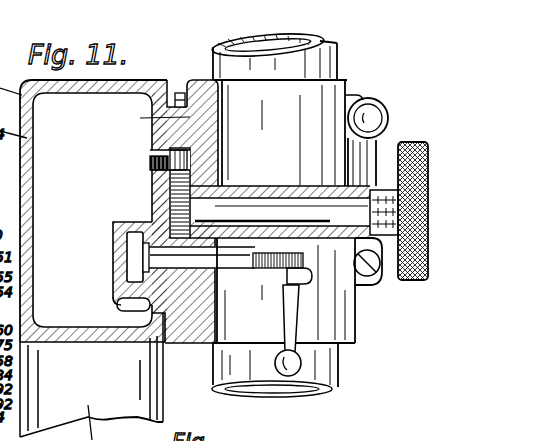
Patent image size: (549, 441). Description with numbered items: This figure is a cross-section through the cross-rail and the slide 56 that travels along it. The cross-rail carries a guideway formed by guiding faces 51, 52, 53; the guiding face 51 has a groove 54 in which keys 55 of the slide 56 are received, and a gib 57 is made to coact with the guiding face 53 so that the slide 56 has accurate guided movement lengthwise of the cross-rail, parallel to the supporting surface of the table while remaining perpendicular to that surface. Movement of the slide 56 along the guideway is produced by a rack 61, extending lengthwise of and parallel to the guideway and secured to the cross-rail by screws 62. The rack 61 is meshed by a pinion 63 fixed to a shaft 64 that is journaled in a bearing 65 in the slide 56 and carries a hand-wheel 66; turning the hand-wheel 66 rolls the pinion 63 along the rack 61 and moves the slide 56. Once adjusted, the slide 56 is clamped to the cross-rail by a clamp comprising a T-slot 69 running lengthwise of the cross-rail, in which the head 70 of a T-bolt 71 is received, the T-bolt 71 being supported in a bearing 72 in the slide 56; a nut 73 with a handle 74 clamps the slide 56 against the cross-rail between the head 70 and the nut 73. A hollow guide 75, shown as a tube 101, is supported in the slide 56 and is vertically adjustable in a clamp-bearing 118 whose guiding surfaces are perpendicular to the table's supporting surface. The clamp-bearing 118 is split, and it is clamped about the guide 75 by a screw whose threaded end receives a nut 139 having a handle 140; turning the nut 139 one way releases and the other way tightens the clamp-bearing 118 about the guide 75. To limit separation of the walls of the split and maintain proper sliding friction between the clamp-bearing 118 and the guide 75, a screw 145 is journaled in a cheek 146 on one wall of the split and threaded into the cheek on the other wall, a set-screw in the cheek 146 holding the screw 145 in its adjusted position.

The guiding face 51 is at (173, 107).
The guiding face 52 is at (190, 117).
The guiding face 53 is at (111, 314).
The groove 54 is at (174, 99).
The keys 55 is at (186, 98).
The slide 56 is at (187, 78).
The gib 57 is at (187, 322).
The rack 61 is at (175, 182).
The screws 62 is at (160, 157).
The pinion 63 is at (180, 202).
The shaft 64 is at (225, 208).
The bearing 65 is at (274, 188).
The hand-wheel 66 is at (420, 143).
The T-slot 69 is at (128, 240).
The head 70 is at (133, 257).
The T-bolt 71 is at (133, 273).
The bearing 72 is at (248, 270).
The nut 73 is at (302, 282).
The handle 74 is at (295, 373).
The guide 75 is at (343, 48).
The tube 101 is at (268, 34).
The clamp-bearing 118 is at (308, 97).
The nut 139 is at (363, 108).
The handle 140 is at (380, 147).
The screw 145 is at (370, 276).
The cheek 146 is at (379, 268).